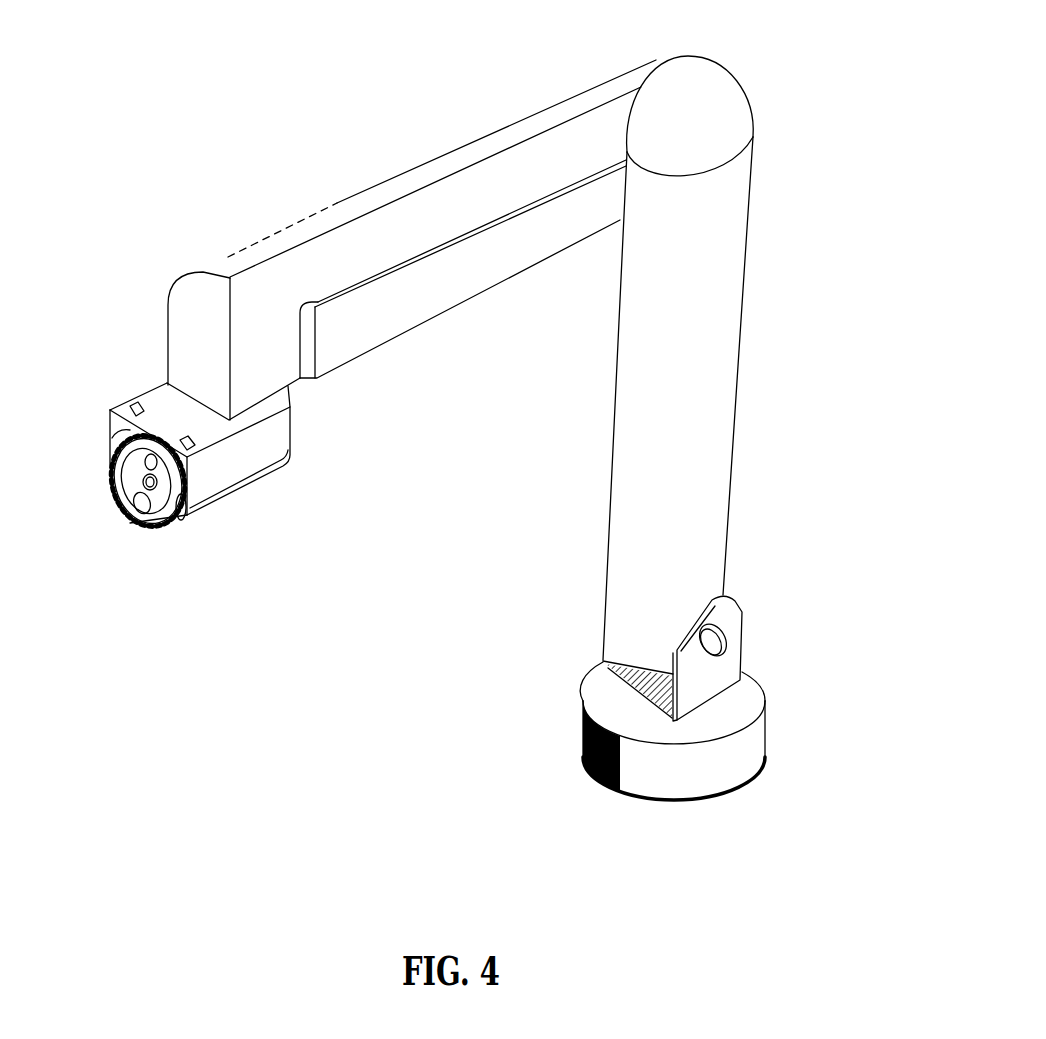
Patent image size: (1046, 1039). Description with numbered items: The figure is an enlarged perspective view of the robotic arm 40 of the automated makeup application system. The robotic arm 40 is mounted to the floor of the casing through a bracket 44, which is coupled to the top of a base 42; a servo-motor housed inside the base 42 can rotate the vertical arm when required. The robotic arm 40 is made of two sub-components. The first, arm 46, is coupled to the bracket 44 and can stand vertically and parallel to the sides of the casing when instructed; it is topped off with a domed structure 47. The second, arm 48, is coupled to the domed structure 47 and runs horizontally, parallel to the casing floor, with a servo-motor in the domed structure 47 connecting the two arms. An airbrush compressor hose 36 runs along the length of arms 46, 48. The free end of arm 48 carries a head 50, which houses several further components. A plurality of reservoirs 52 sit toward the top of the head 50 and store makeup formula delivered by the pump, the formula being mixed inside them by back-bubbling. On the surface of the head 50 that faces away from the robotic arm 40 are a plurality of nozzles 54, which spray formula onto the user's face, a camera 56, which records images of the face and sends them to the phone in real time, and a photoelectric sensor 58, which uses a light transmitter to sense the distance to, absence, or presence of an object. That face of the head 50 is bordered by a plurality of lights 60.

The robotic arm 40 is at (462, 404).
The airbrush compressor hose 36 is at (343, 303).
The base 42 is at (773, 727).
The bracket 44 is at (753, 632).
The arm 46 is at (690, 355).
The domed structure 47 is at (700, 78).
The arm 48 is at (780, 347).
The head 50 is at (270, 487).
The reservoirs 52 is at (185, 438).
The nozzles 54 is at (112, 438).
The camera 56 is at (177, 517).
The photoelectric sensor 58 is at (133, 522).
The lights 60 is at (110, 475).